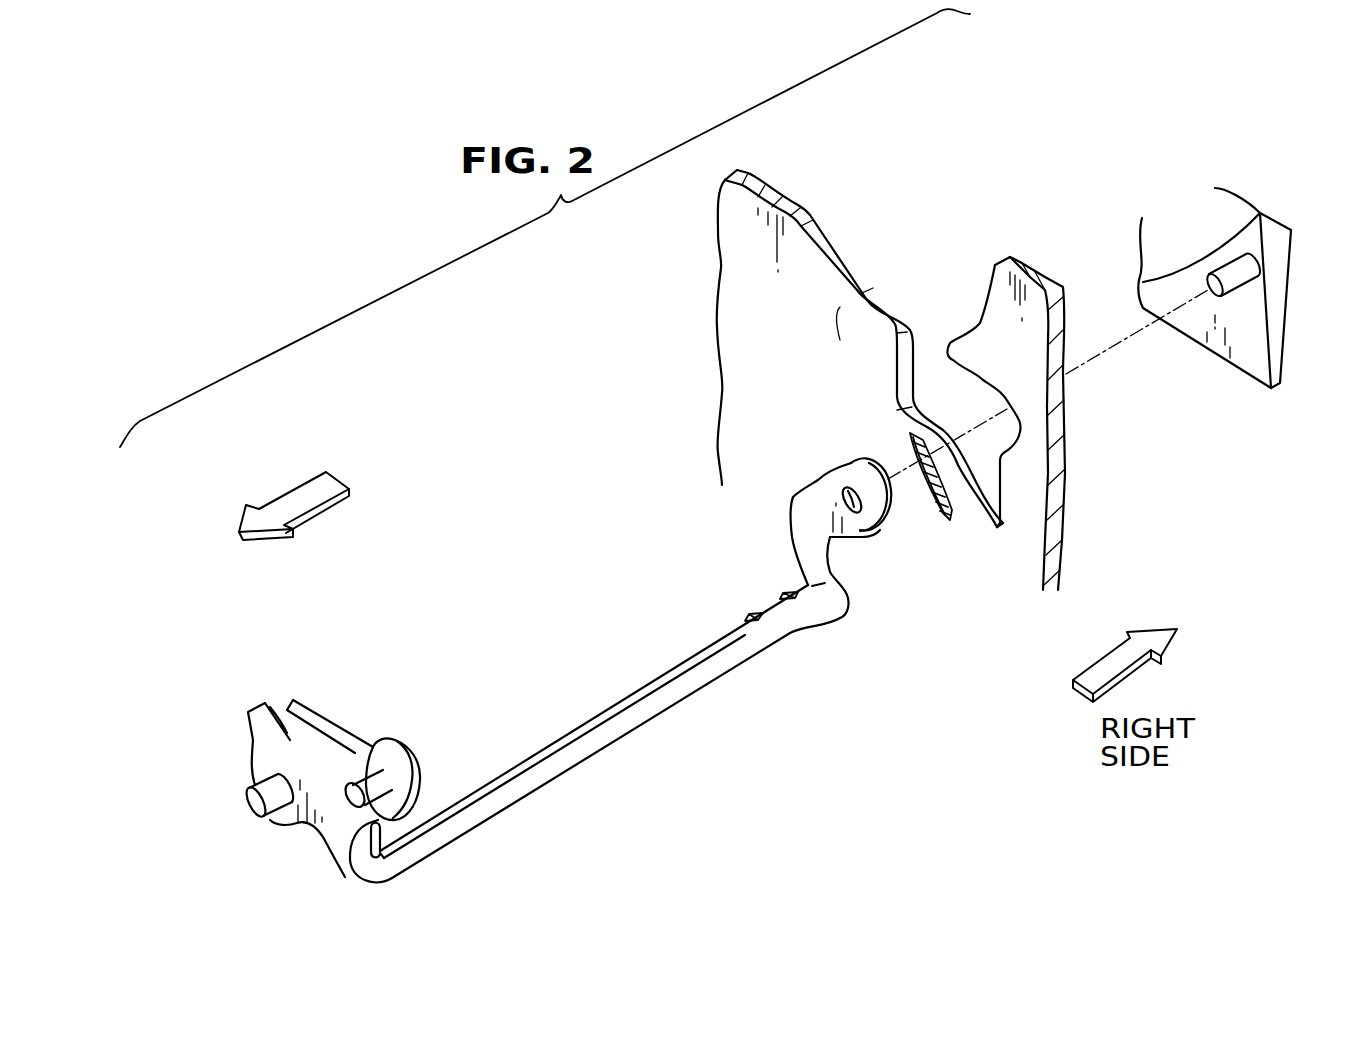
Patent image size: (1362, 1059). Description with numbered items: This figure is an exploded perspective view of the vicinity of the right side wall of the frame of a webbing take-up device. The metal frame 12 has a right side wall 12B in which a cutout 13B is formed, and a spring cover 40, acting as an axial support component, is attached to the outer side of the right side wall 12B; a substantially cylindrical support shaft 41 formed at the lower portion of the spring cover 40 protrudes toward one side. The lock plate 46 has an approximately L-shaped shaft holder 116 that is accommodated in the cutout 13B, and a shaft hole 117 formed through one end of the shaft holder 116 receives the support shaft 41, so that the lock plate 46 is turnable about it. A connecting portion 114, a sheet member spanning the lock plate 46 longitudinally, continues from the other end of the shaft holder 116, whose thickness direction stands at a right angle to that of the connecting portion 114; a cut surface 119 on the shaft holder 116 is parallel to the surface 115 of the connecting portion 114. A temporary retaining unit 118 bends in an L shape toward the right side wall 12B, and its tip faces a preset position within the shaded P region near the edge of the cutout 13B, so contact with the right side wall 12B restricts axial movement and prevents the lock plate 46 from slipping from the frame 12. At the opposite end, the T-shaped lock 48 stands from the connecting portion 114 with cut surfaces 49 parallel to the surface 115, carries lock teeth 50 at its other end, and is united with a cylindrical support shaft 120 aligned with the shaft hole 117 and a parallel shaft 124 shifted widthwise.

The frame 12 is at (833, 247).
The right side wall 12B is at (840, 307).
The cutout 13B is at (1008, 434).
The spring cover 40 is at (1265, 213).
The support shaft 41 is at (1237, 288).
The lock plate 46 is at (642, 716).
The lock 48 is at (327, 760).
The cut surfaces 49 is at (334, 848).
The lock teeth 50 is at (246, 737).
The connecting portion 114 is at (583, 748).
The surface 115 is at (588, 722).
The shaft holder 116 is at (817, 507).
The shaft hole 117 is at (852, 487).
The temporary retaining unit 118 is at (783, 594).
The cut surface 119 is at (852, 546).
The support shaft 120 is at (394, 784).
The shaft 124 is at (282, 820).
The P region P is at (944, 522).